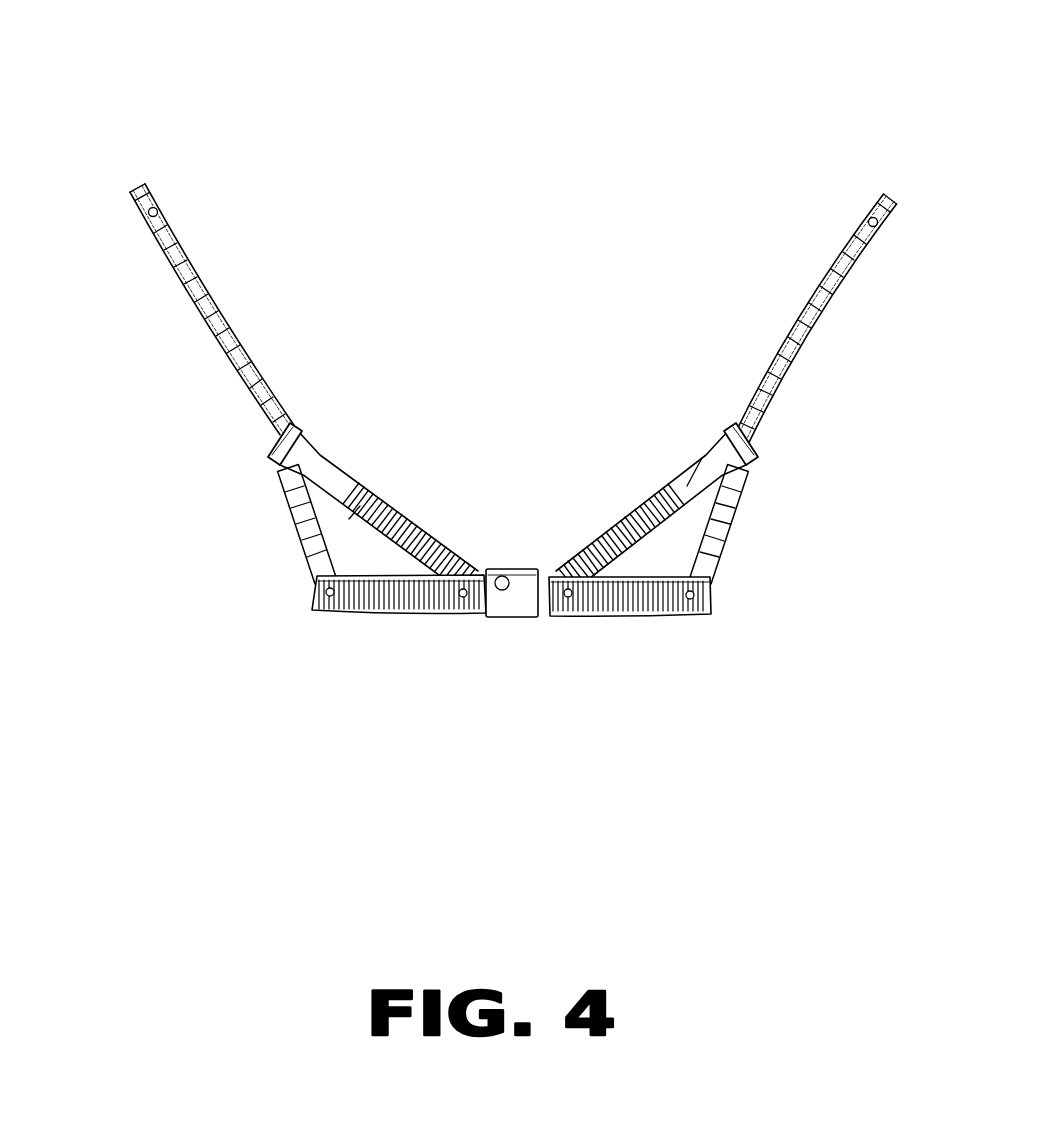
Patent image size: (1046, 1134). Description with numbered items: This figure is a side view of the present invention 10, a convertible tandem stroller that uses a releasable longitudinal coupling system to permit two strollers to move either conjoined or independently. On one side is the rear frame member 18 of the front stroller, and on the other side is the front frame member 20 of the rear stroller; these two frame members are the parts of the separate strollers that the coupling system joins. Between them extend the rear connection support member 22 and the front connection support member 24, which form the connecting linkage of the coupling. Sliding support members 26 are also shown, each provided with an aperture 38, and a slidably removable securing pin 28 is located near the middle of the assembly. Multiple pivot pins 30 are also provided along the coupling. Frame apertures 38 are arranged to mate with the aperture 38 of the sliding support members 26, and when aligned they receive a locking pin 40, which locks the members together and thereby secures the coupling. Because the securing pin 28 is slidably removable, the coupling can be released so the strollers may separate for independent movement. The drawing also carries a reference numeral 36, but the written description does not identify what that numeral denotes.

The present invention 10 is at (476, 209).
The rear frame member 18 is at (163, 212).
The front frame member 20 is at (797, 313).
The rear connection support member 22 is at (387, 607).
The front connection support member 24 is at (633, 600).
The sliding support members 26 is at (412, 522).
The securing pin 28 is at (504, 590).
The pivot pins 30 is at (330, 592).
The attachment hole 36 is at (149, 222).
The aperture 38 is at (569, 414).
The locking pin 40 is at (290, 443).